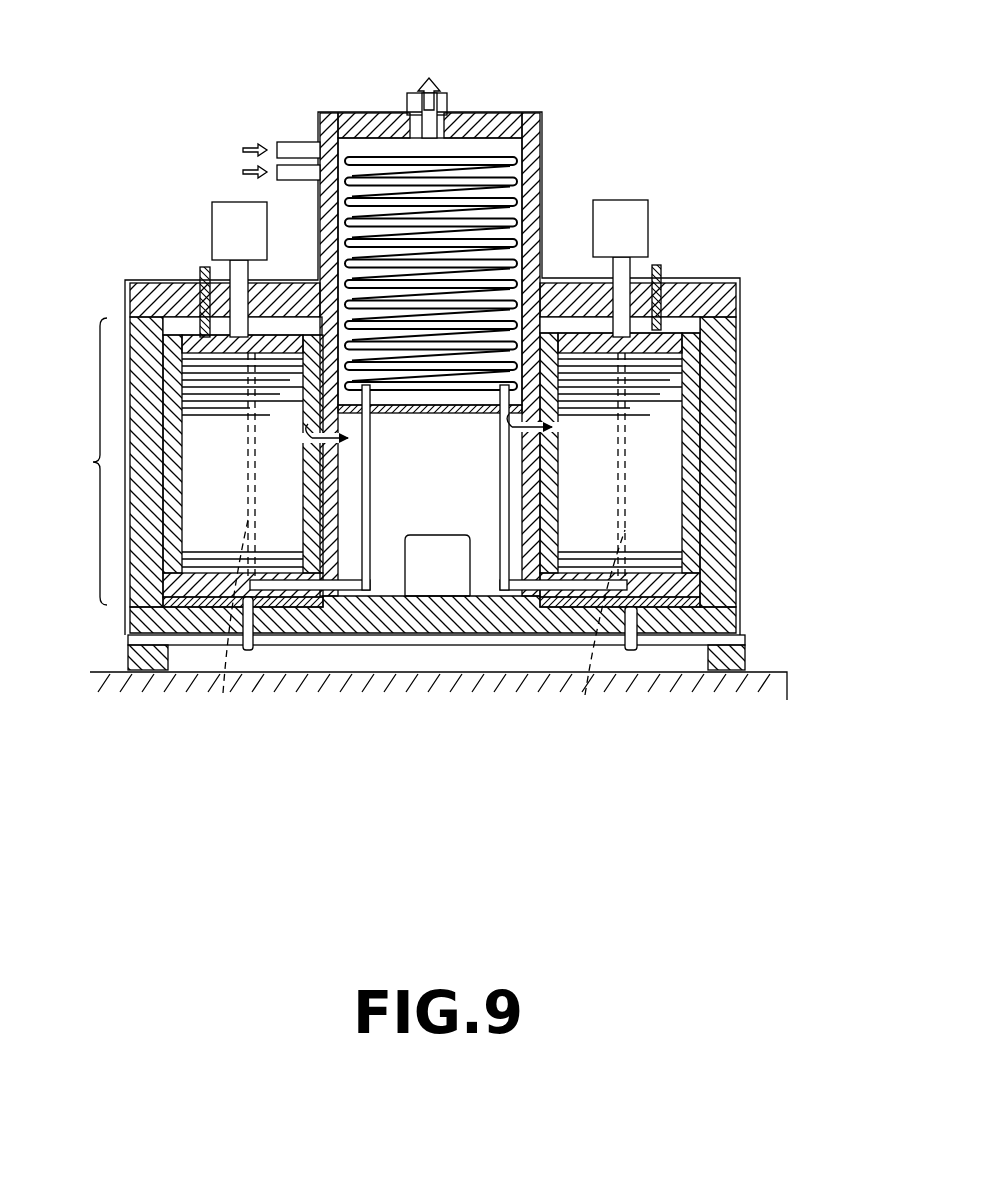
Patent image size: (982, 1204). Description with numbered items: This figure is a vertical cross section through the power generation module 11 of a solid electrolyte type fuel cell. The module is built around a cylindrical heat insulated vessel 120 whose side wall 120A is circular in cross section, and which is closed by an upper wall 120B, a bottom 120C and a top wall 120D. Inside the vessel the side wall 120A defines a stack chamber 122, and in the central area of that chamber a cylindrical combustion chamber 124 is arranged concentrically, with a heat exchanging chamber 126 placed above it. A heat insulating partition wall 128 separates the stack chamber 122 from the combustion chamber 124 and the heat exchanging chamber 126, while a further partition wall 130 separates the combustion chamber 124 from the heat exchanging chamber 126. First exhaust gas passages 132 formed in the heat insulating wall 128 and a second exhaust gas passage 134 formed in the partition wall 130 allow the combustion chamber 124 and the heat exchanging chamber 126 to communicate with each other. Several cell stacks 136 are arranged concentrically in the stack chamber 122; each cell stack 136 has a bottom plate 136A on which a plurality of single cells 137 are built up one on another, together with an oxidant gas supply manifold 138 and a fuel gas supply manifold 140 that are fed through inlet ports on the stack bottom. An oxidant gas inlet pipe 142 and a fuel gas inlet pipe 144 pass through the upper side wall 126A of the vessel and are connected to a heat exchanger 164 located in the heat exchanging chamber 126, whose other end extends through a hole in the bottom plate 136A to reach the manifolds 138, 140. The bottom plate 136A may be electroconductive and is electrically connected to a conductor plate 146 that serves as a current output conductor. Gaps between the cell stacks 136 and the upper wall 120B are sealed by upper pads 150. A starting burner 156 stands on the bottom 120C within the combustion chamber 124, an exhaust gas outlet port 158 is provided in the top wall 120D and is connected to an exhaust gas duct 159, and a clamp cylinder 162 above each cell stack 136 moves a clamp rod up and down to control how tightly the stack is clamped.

The power generation module 11 is at (770, 288).
The heat insulated vessel 120 is at (153, 255).
The side wall 120A is at (727, 576).
The upper wall 120B is at (700, 286).
The bottom 120C is at (447, 626).
The top wall 120D is at (395, 114).
The stack chamber 122 is at (97, 464).
The combustion chamber 124 is at (415, 506).
The heat exchanging chamber 126 is at (356, 125).
The upper side wall 126A is at (317, 127).
The partition wall 128 is at (532, 327).
The partition wall 130 is at (405, 406).
The first exhaust gas passages 132 is at (536, 471).
The second exhaust gas passage 134 is at (441, 533).
The cell stack 136 is at (663, 493).
The bottom plate 136A is at (683, 572).
The single cells 137 is at (662, 547).
The oxidant gas supply manifold 138 is at (221, 627).
The fuel gas supply manifold 140 is at (590, 631).
The oxidant gas inlet pipe 142 is at (288, 140).
The fuel gas inlet pipe 144 is at (296, 182).
The conductor plate 146 is at (690, 598).
The upper pads 150 is at (658, 268).
The starting burner 156 is at (463, 573).
The exhaust gas outlet port 158 is at (447, 100).
The exhaust gas duct 159 is at (438, 95).
The clamp cylinder 162 is at (632, 216).
The heat exchanger 164 is at (478, 160).